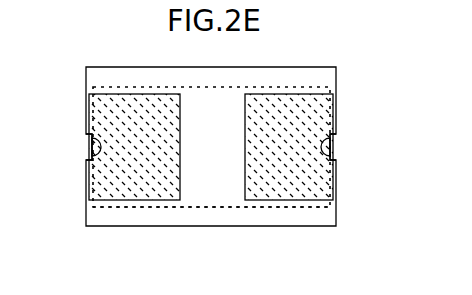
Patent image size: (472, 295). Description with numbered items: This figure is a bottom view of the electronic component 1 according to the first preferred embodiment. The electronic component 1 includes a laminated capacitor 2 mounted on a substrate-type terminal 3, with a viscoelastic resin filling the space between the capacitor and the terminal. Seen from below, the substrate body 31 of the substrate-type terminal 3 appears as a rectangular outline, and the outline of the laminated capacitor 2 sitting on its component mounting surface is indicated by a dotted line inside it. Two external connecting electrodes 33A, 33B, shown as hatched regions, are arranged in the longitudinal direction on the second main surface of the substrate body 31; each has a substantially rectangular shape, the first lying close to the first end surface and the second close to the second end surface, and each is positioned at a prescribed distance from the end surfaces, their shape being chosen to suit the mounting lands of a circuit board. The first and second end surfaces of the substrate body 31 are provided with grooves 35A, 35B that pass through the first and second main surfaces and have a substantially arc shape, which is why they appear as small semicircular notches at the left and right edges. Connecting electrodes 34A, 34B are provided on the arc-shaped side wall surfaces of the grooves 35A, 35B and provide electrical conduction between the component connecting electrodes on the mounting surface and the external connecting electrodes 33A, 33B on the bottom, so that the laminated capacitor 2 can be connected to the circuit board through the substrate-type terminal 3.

The electronic component 1 is at (390, 55).
The laminated capacitor 2 is at (301, 87).
The substrate-type terminal 3 is at (74, 234).
The substrate body 31 is at (223, 219).
The external connecting electrode 33A is at (130, 189).
The external connecting electrode 33B is at (298, 189).
The connecting electrode 34A is at (91, 135).
The connecting electrode 34B is at (337, 137).
The groove 35A is at (80, 145).
The groove 35B is at (344, 146).